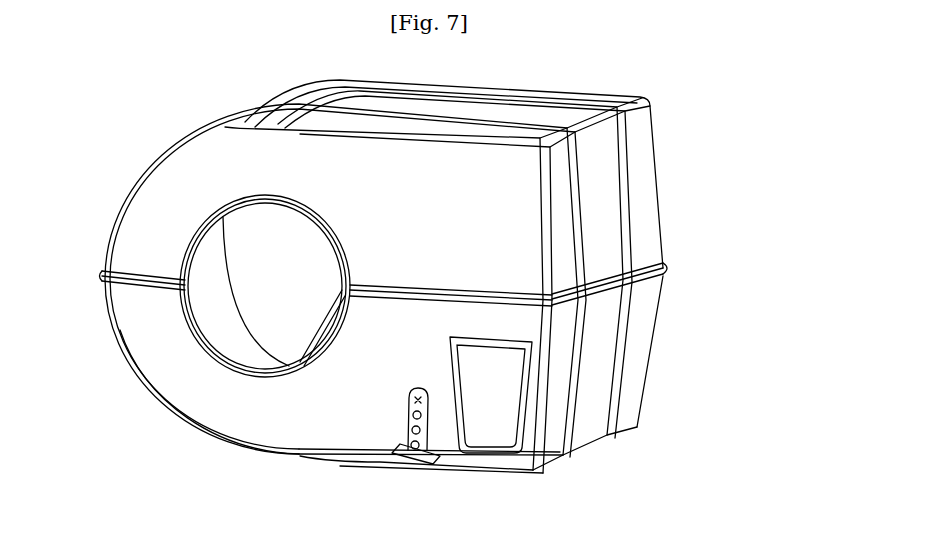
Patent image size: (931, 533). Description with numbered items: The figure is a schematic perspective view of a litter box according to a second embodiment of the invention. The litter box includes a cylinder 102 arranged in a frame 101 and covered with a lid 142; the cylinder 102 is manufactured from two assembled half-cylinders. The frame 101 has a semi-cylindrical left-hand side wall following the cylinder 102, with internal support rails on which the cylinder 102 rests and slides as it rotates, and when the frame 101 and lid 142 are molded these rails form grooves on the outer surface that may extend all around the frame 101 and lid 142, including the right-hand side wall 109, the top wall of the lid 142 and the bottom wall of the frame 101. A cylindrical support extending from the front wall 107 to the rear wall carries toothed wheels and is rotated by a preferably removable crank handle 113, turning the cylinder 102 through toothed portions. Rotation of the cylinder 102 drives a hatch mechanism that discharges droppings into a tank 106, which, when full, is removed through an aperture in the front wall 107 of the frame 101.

The frame 101 is at (193, 383).
The cylinder 102 is at (208, 290).
The tank 106 is at (488, 435).
The front wall 107 is at (263, 428).
The right-hand side wall 109 is at (652, 300).
The crank handle 113 is at (404, 413).
The lid 142 is at (241, 151).